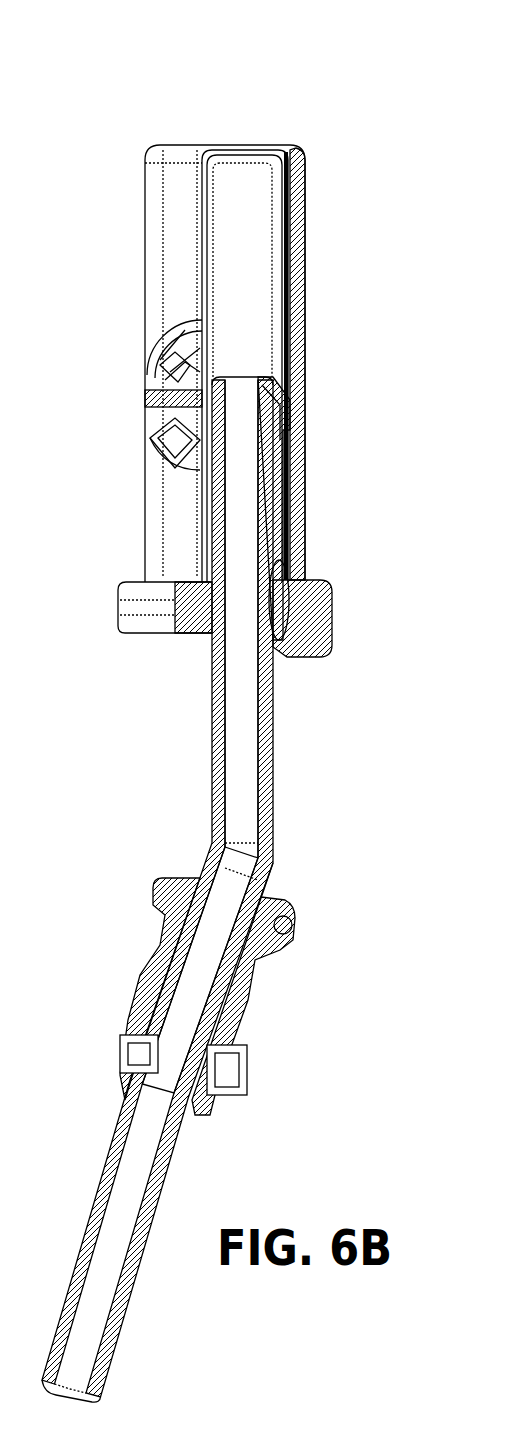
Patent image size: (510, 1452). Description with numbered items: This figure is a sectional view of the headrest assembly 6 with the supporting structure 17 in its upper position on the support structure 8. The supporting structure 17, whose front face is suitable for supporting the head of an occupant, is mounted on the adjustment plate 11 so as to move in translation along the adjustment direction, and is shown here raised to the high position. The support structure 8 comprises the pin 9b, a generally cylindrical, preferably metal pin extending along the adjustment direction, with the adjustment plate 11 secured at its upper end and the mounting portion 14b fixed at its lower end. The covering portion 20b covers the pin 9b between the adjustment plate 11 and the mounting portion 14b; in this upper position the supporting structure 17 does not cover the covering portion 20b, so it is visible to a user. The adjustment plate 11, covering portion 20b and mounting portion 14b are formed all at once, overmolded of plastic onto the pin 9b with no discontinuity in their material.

The headrest assembly 6 is at (125, 112).
The supporting structure 17 is at (178, 173).
The adjustment plate 11 is at (272, 510).
The pin 9b is at (245, 752).
The covering portion 20b is at (275, 787).
The support structure 8 is at (161, 856).
The mounting portion 14b is at (253, 988).